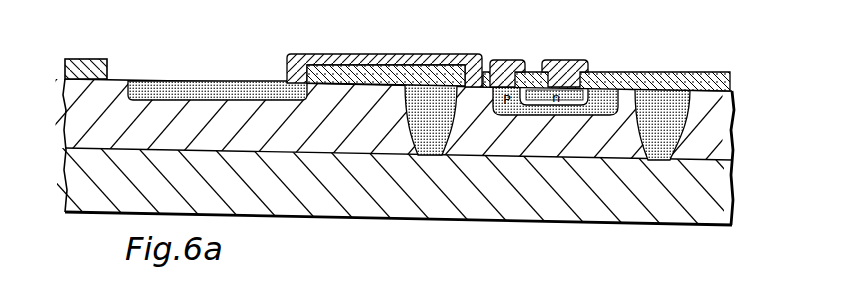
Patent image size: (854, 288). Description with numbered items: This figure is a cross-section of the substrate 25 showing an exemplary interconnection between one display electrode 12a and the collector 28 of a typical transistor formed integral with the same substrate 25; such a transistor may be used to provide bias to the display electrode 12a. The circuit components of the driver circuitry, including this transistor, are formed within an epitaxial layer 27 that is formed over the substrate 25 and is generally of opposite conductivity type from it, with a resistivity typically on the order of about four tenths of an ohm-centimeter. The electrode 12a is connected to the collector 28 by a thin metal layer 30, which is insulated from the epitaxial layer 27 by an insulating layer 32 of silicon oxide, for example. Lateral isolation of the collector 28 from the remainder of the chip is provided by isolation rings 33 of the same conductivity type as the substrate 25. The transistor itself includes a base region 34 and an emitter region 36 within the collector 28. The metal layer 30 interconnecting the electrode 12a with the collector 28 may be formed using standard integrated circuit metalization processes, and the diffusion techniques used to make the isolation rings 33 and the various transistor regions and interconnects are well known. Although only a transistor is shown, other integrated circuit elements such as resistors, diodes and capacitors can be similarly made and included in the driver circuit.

The display electrode 12a is at (192, 80).
The substrate 25 is at (106, 214).
The epitaxial layer 27 is at (733, 131).
The collector 28 is at (485, 150).
The metal layer 30 is at (413, 54).
The insulating layer 32 is at (339, 54).
The isolation rings 33 is at (428, 157).
The base region 34 is at (613, 79).
The emitter region 36 is at (567, 100).